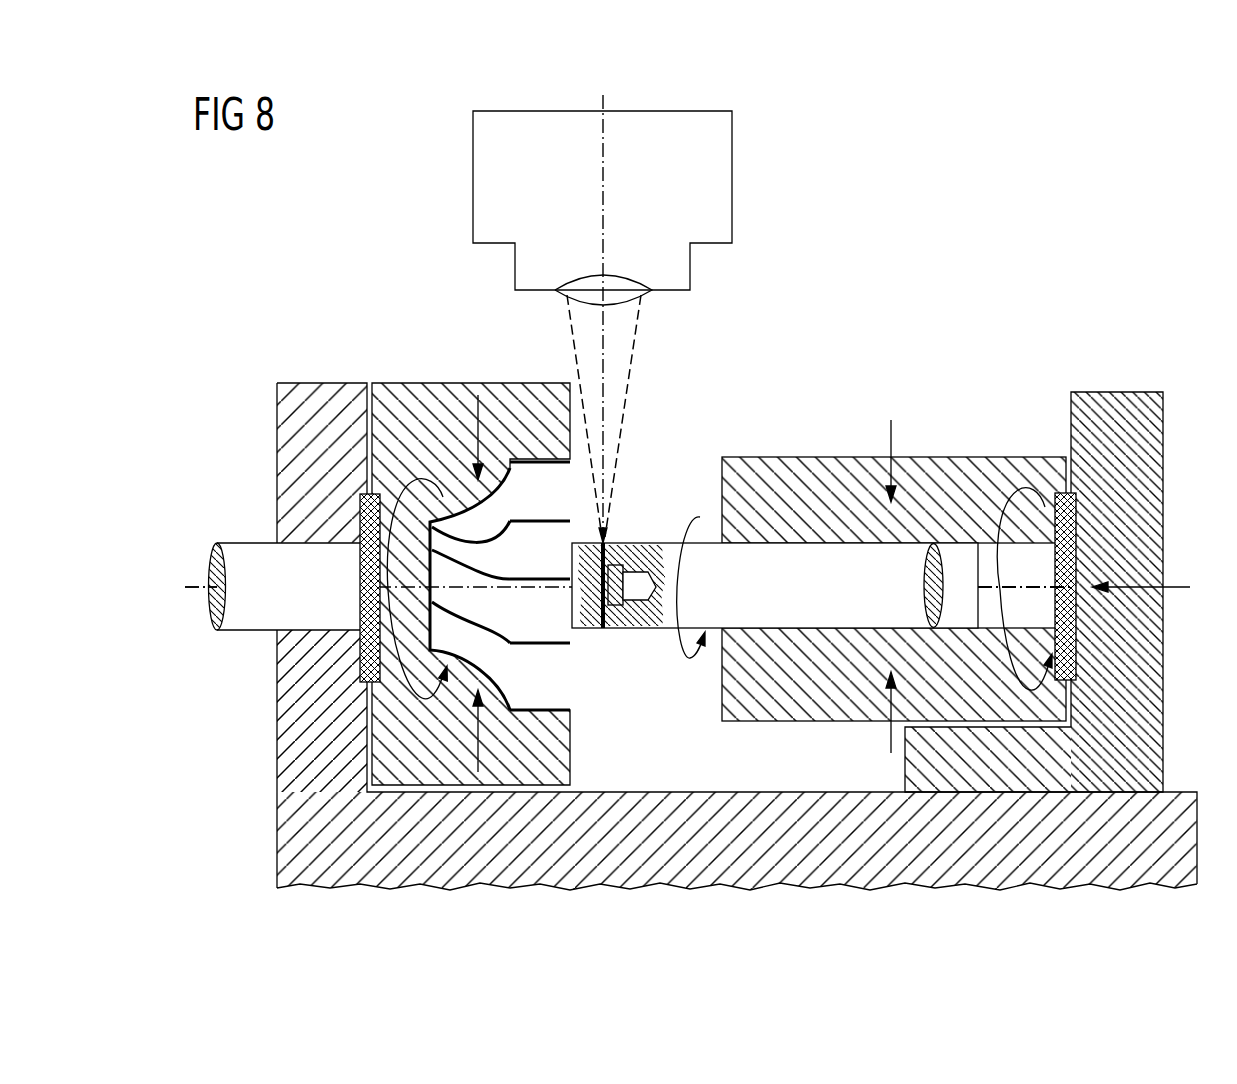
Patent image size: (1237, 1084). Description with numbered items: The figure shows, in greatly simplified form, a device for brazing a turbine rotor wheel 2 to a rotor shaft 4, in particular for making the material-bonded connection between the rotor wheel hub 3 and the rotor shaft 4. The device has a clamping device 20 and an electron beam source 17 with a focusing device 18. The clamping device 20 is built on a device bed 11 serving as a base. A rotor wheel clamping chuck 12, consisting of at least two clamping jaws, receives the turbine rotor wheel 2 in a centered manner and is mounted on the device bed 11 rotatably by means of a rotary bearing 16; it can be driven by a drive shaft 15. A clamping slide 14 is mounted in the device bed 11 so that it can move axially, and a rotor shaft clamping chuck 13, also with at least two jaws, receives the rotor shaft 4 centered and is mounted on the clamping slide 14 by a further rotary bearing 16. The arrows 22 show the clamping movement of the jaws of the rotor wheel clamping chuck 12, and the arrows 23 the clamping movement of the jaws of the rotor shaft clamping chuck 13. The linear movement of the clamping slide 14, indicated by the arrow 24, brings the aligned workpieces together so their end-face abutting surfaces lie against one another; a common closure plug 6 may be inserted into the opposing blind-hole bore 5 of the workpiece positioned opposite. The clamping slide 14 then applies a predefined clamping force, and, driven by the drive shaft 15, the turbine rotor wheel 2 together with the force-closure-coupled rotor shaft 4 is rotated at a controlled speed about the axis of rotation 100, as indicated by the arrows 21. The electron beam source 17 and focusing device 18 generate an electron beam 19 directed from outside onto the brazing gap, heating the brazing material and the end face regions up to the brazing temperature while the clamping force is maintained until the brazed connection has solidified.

The turbine rotor wheel 2 is at (560, 688).
The rotor wheel hub 3 is at (592, 628).
The rotor shaft 4 is at (775, 520).
The blind-hole bore 5 is at (632, 600).
The closure plug 6 is at (615, 565).
The device bed 11 is at (722, 802).
The rotor wheel clamping chuck 12 is at (528, 385).
The rotor shaft clamping chuck 13 is at (957, 455).
The clamping slide 14 is at (1150, 678).
The drive shaft 15 is at (256, 552).
The rotary bearing 16 is at (360, 600).
The electron beam source 17 is at (734, 185).
The focusing device 18 is at (590, 285).
The electron beam 19 is at (621, 376).
The clamping device 20 is at (968, 337).
The arrows indicating rotation 21 is at (423, 467).
The arrows indicating clamping movement of rotor wheel clamping chuck jaws 22 is at (478, 395).
The arrows indicating clamping movement of rotor shaft clamping chuck jaws 23 is at (888, 437).
The arrow indicating linear movement of clamping slide 24 is at (1190, 592).
The axis of rotation 100 is at (772, 576).